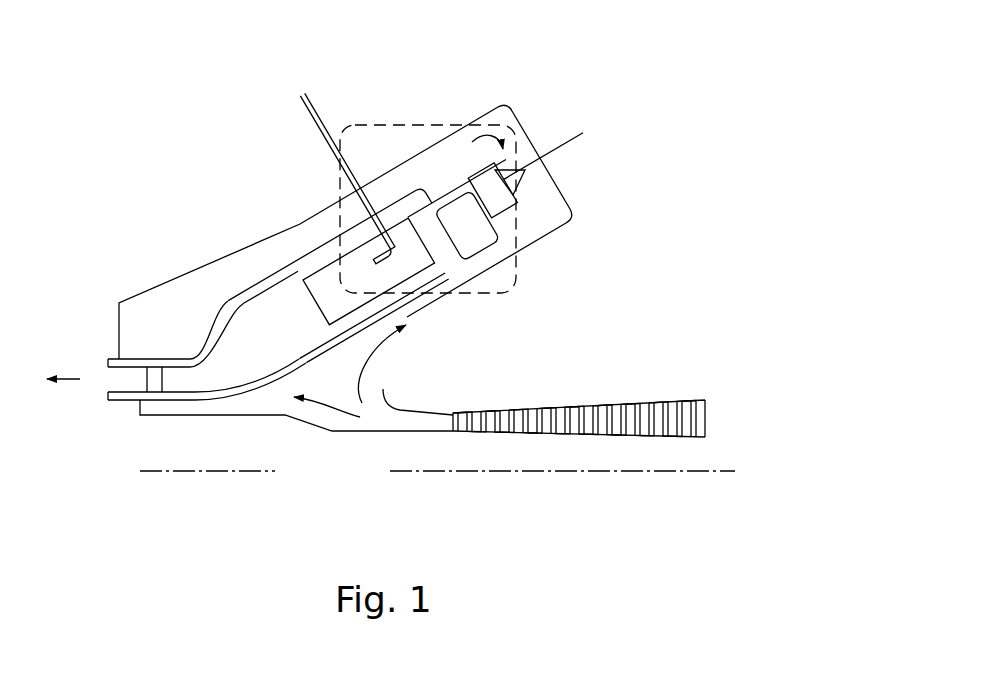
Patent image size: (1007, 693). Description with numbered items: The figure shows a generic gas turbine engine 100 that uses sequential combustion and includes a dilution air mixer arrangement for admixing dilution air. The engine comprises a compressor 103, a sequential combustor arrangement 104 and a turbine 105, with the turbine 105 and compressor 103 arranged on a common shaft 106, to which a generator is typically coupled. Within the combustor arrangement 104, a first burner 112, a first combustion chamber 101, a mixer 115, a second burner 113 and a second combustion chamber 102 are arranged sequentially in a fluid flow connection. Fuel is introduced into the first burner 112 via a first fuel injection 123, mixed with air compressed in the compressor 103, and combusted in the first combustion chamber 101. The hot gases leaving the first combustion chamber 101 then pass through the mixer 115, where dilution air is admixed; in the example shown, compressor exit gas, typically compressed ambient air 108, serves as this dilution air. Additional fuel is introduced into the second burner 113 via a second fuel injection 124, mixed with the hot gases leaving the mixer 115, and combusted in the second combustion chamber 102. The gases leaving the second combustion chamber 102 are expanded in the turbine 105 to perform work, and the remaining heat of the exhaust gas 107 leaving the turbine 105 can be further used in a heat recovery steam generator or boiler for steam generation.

The gas turbine engine 100 is at (265, 97).
The first combustion chamber 101 is at (467, 200).
The second combustion chamber 102 is at (268, 322).
The compressor 103 is at (642, 441).
The combustor arrangement 104 is at (579, 176).
The turbine 105 is at (158, 433).
The shaft 106 is at (351, 481).
The exhaust gas 107 is at (80, 379).
The compressed ambient air 108 is at (415, 430).
The first burner 112 is at (538, 193).
The second burner 113 is at (428, 292).
The mixer 115 is at (520, 212).
The first fuel injection 123 is at (584, 134).
The second fuel injection 124 is at (312, 93).